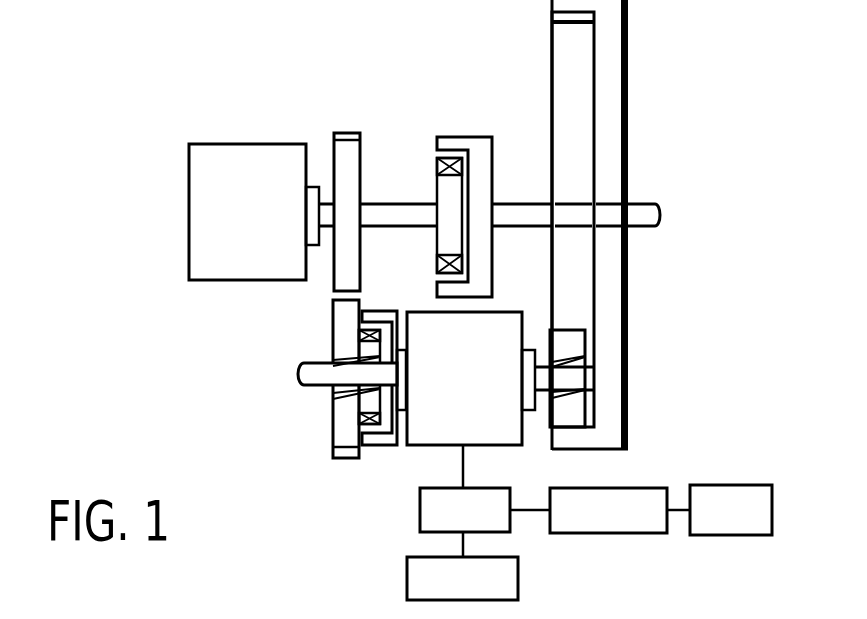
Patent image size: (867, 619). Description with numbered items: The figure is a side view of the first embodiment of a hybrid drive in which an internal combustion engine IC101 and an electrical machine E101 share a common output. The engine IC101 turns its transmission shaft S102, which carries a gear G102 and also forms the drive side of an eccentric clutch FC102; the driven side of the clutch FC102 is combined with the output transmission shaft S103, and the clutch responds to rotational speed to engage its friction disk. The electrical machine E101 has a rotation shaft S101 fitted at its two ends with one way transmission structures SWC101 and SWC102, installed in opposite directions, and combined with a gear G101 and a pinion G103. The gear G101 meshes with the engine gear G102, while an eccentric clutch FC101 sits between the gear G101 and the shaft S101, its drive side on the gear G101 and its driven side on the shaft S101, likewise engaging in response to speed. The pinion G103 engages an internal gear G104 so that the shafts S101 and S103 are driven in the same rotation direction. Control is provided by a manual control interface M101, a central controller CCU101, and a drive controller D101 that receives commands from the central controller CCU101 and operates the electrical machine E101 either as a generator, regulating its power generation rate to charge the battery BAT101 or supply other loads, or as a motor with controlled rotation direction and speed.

The internal combustion engine IC101 is at (238, 160).
The gear G102 is at (348, 135).
The engine transmission shaft S102 is at (403, 210).
The eccentric clutch FC102 is at (452, 137).
The internal gear G104 is at (577, 22).
The output transmission shaft S103 is at (648, 215).
The gear G101 is at (345, 318).
The eccentric clutch FC101 is at (372, 445).
The rotation shaft S101 is at (298, 372).
The one way transmission structure SWC101 is at (338, 393).
The electrical machine E101 is at (425, 323).
The pinion G103 is at (565, 332).
The one way transmission structure SWC102 is at (590, 367).
The drive controller D101 is at (485, 522).
The central controller CCU101 is at (620, 510).
The manual control interface M101 is at (731, 510).
The battery BAT101 is at (462, 578).